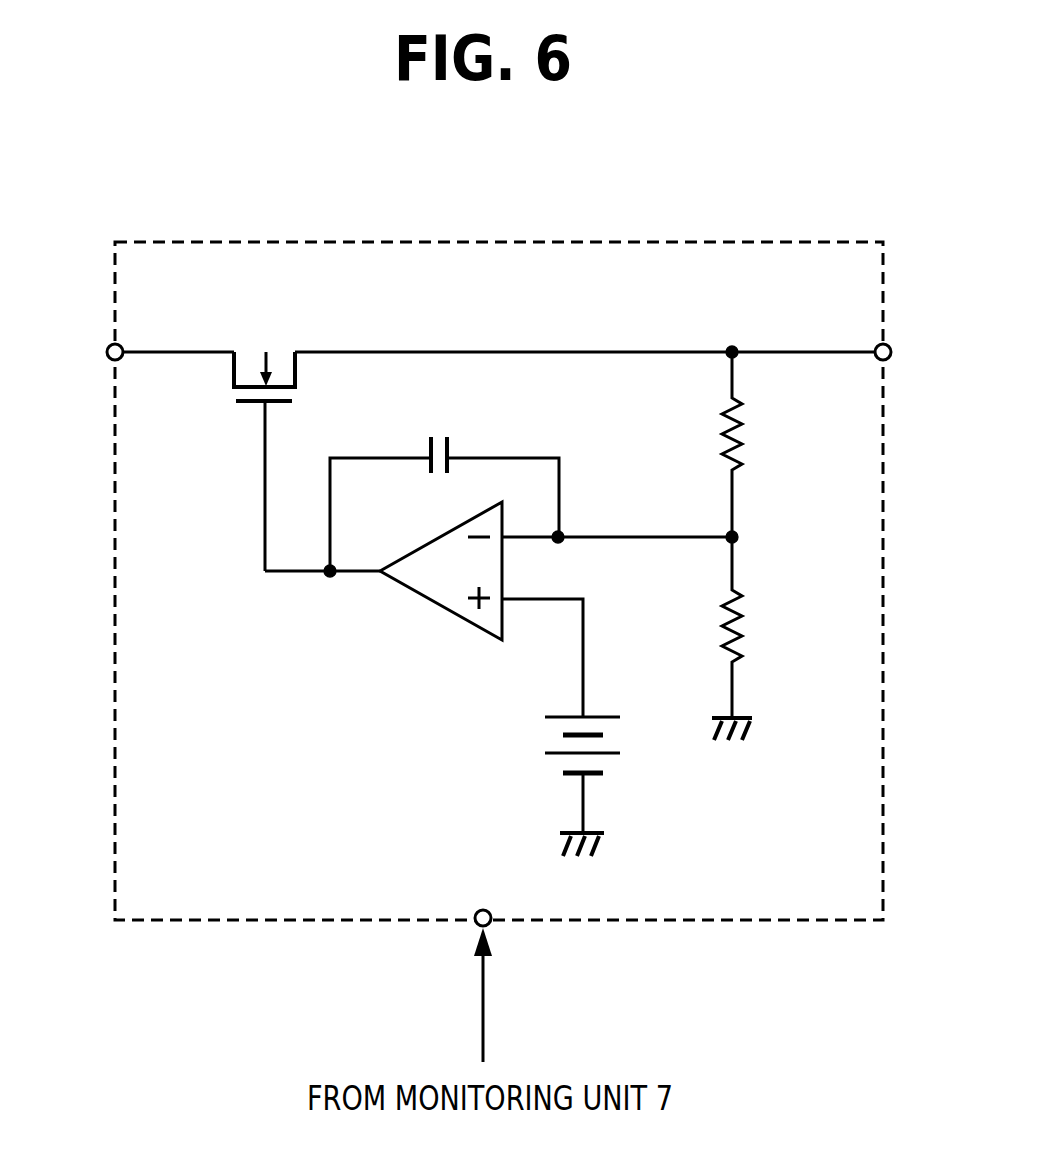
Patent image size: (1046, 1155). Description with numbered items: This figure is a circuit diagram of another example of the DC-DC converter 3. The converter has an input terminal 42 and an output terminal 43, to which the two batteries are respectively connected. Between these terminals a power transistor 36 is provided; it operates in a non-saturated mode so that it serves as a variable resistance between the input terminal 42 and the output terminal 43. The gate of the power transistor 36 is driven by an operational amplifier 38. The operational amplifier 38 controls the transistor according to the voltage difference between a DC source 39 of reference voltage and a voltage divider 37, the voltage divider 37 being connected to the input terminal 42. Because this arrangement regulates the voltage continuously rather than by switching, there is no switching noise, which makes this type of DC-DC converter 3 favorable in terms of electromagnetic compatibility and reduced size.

The DC-DC converter 3 is at (477, 242).
The power transistor 36 is at (241, 406).
The voltage divider 37 is at (751, 538).
The operational amplifier 38 is at (436, 600).
The DC source of reference voltage 39 is at (604, 718).
The input terminal 42 is at (893, 348).
The output terminal 43 is at (107, 350).